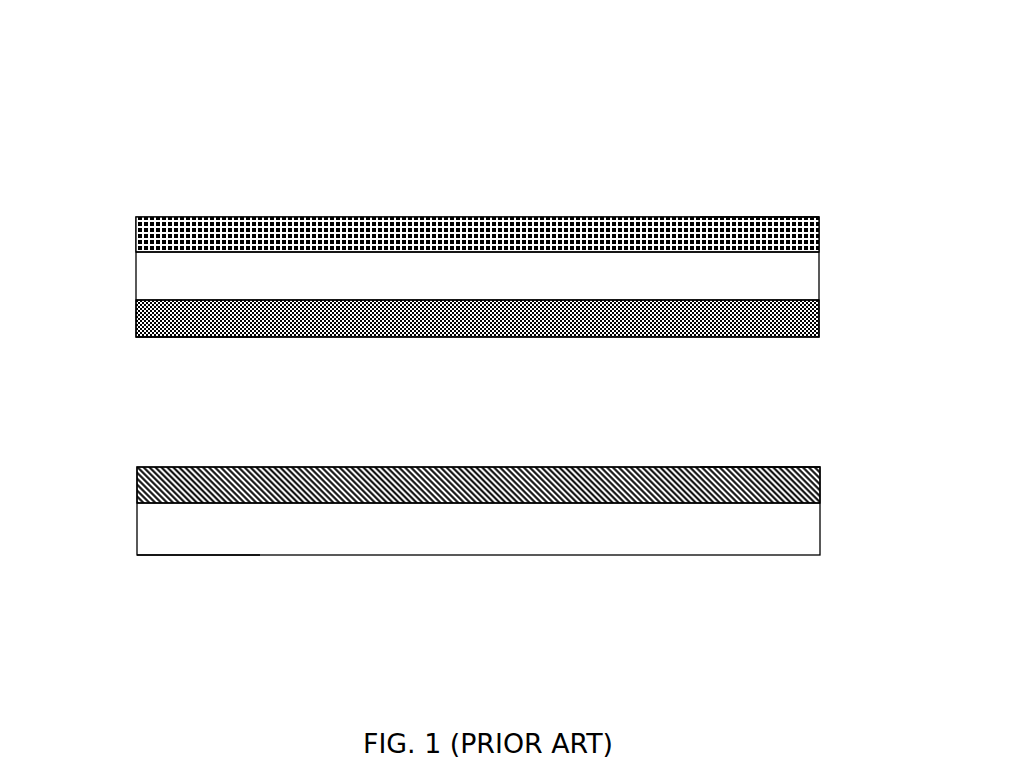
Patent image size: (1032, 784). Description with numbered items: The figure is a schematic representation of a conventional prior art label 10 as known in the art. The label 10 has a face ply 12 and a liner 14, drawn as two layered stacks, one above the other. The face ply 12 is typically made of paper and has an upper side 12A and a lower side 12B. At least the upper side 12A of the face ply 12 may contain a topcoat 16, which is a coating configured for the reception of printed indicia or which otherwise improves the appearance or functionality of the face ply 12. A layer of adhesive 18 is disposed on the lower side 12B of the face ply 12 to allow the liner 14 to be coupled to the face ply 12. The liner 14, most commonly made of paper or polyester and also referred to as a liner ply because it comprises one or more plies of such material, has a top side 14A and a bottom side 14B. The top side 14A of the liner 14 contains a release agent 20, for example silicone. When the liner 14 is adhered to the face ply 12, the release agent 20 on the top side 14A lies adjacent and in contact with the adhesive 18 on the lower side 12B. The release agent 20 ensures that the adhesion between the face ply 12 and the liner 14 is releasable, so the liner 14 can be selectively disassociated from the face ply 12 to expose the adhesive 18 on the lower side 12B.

The label 10 is at (87, 159).
The face ply 12 is at (864, 255).
The upper side of face ply 12A is at (757, 182).
The lower side of face ply 12B is at (151, 358).
The liner 14 is at (865, 509).
The top side of liner ply 14A is at (746, 465).
The bottom side of liner ply 14B is at (177, 564).
The topcoat 16 is at (442, 216).
The adhesive 18 is at (432, 338).
The release agent 20 is at (487, 466).